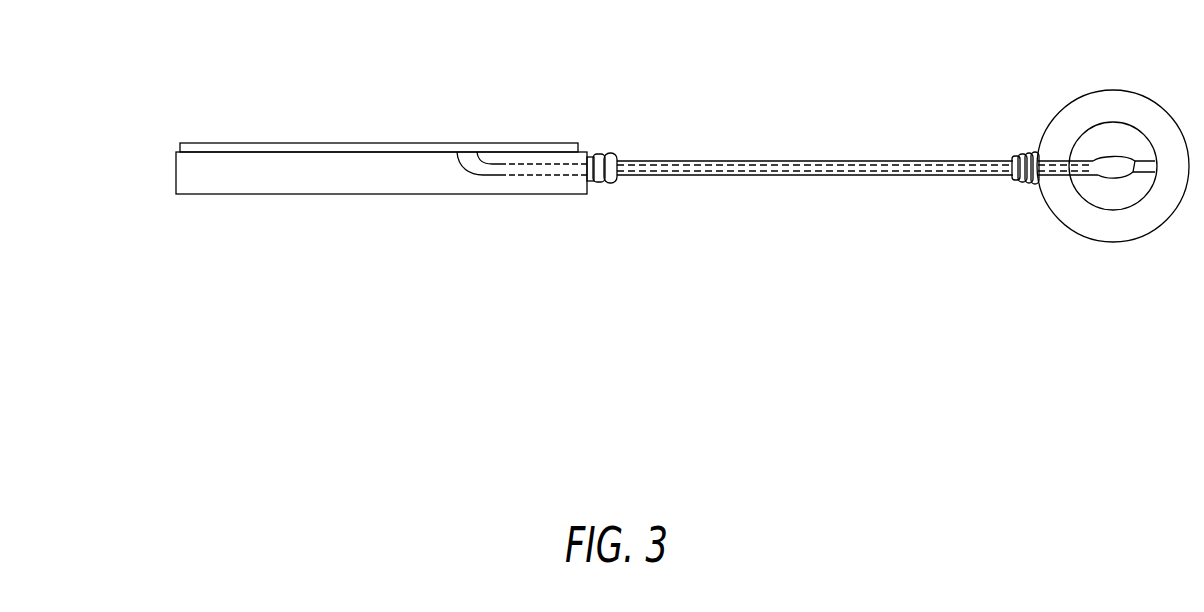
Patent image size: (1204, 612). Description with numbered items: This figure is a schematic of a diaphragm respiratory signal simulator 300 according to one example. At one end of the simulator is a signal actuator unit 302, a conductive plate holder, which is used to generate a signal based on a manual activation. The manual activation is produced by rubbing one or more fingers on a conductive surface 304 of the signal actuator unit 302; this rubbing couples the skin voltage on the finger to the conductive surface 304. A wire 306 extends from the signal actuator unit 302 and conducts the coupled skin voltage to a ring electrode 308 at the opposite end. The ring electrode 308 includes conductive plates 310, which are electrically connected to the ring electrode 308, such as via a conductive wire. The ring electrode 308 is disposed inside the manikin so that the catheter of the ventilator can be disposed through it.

The diaphragm respiratory signal simulator 300 is at (794, 352).
The signal actuator unit 302 is at (227, 195).
The conductive surface 304 is at (355, 143).
The wire 306 is at (708, 163).
The ring electrode 308 is at (1048, 206).
The conductive plates 310 is at (1105, 177).